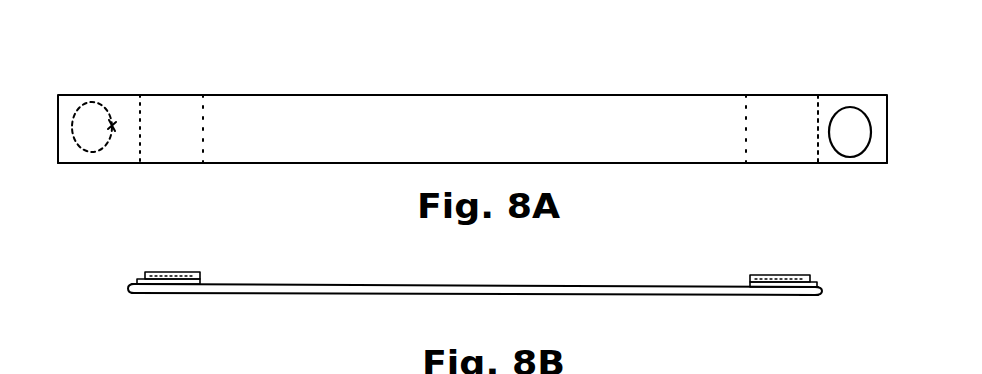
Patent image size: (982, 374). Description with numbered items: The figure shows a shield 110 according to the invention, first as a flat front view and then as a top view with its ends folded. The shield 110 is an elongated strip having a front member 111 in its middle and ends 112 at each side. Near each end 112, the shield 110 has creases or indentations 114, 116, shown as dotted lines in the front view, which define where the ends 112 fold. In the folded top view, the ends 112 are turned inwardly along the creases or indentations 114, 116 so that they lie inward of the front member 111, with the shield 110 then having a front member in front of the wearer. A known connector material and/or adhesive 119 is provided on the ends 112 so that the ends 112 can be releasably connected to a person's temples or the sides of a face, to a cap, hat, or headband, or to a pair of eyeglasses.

In FIG. 8A, the shield 110 is at (472, 102).
In FIG. 8B, the shield 110 is at (475, 263).
In FIG. 8A, the front member 111 is at (472, 178).
In FIG. 8B, the front member 111 is at (475, 329).
In FIG. 8A, the ends 112 is at (454, 161).
In FIG. 8B, the ends 112 is at (477, 248).
In FIG. 8A, the crease or indentation 114 is at (495, 99).
In FIG. 8A, the crease or indentation 116 is at (483, 102).
In FIG. 8A, the connector material or adhesive 119 is at (492, 82).
In FIG. 8B, the connector material or adhesive 119 is at (460, 306).